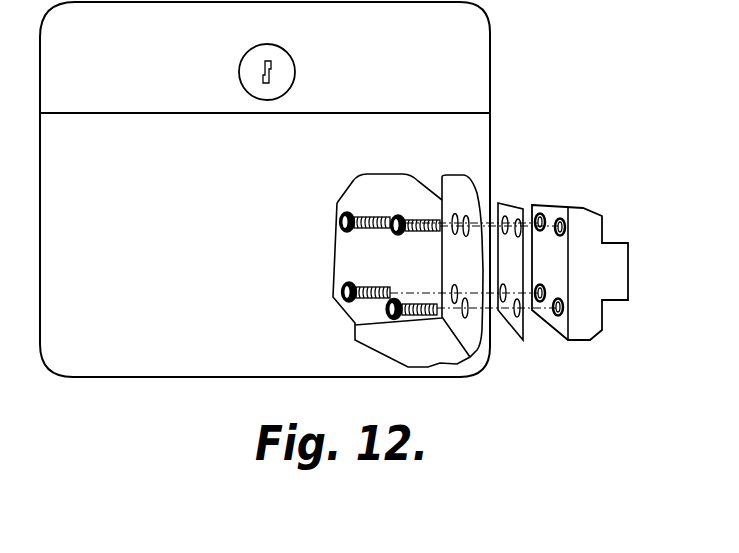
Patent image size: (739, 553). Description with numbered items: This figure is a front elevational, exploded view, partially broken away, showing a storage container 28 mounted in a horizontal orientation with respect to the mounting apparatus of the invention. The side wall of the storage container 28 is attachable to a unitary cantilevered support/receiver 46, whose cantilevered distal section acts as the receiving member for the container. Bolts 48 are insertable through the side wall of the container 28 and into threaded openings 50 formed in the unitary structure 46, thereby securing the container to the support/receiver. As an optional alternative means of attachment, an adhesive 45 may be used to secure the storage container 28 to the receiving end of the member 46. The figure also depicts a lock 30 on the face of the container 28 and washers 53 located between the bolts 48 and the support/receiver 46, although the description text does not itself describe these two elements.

The storage container 28 is at (150, 313).
The lock cylinder 30 is at (281, 71).
The adhesive layer 45 is at (508, 318).
The unitary cantilevered support/receiver 46 is at (590, 243).
The bolts 48 is at (420, 216).
The threaded openings 50 is at (558, 216).
The washers 53 is at (463, 216).